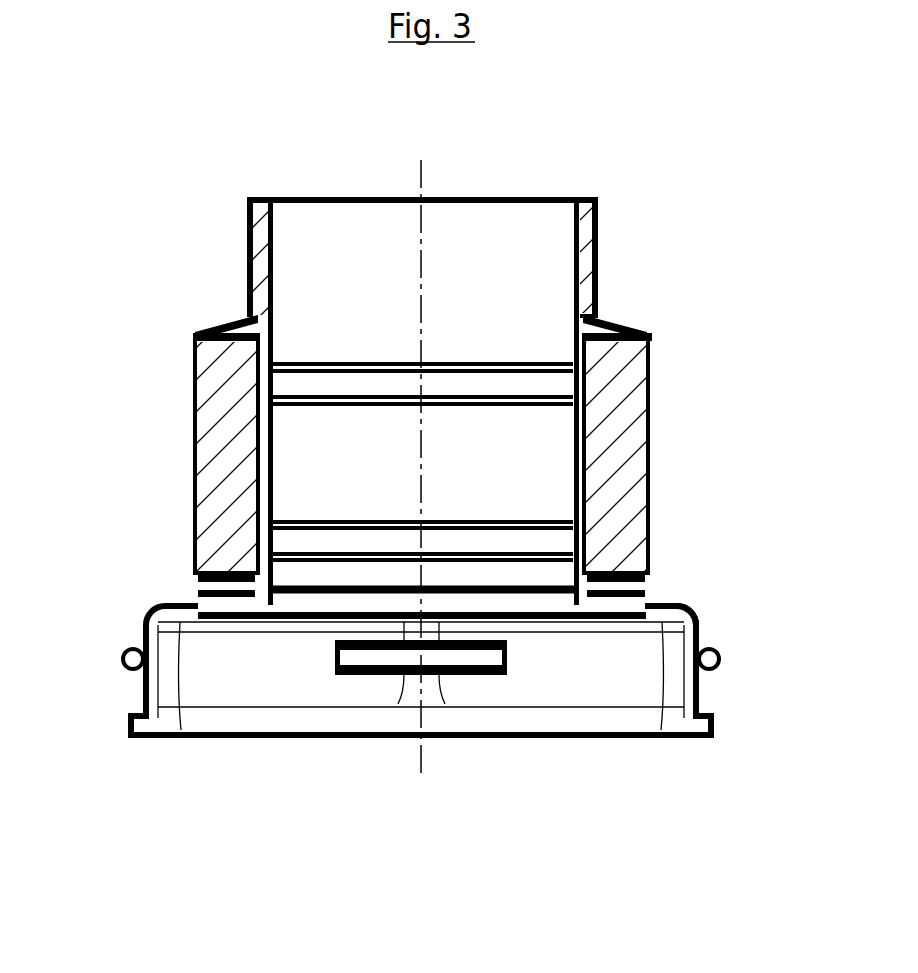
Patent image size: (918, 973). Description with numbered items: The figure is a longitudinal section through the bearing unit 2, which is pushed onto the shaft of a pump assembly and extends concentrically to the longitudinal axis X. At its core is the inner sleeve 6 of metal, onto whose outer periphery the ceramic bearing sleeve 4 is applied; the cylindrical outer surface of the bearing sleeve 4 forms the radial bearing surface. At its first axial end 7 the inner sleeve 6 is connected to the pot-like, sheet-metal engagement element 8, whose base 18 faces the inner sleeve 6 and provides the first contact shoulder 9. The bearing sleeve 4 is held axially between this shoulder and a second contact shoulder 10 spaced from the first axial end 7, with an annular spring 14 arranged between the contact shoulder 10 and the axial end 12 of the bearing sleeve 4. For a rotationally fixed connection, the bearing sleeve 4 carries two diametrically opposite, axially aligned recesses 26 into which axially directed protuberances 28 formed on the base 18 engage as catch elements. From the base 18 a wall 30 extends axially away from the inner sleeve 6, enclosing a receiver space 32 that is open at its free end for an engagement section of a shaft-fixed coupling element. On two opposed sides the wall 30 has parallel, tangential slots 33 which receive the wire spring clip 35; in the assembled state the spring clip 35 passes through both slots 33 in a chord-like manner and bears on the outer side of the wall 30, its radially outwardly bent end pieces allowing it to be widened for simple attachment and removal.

The bearing unit 2 is at (527, 190).
The bearing sleeve 4 is at (636, 445).
The inner sleeve 6 is at (600, 223).
The first axial end 7 is at (271, 622).
The engagement element 8 is at (135, 713).
The first contact shoulder 9 is at (655, 600).
The second contact shoulder 10 is at (602, 311).
The axial end of the bearing sleeve 12 is at (650, 350).
The annular spring 14 is at (625, 330).
The base 18 is at (165, 607).
The recesses 26 is at (648, 580).
The protuberances 28 is at (226, 608).
The wall 30 is at (668, 622).
The receiver space 32 is at (592, 694).
The slots 33 is at (362, 665).
The spring clip 35 is at (123, 659).
The longitudinal axis X is at (421, 772).